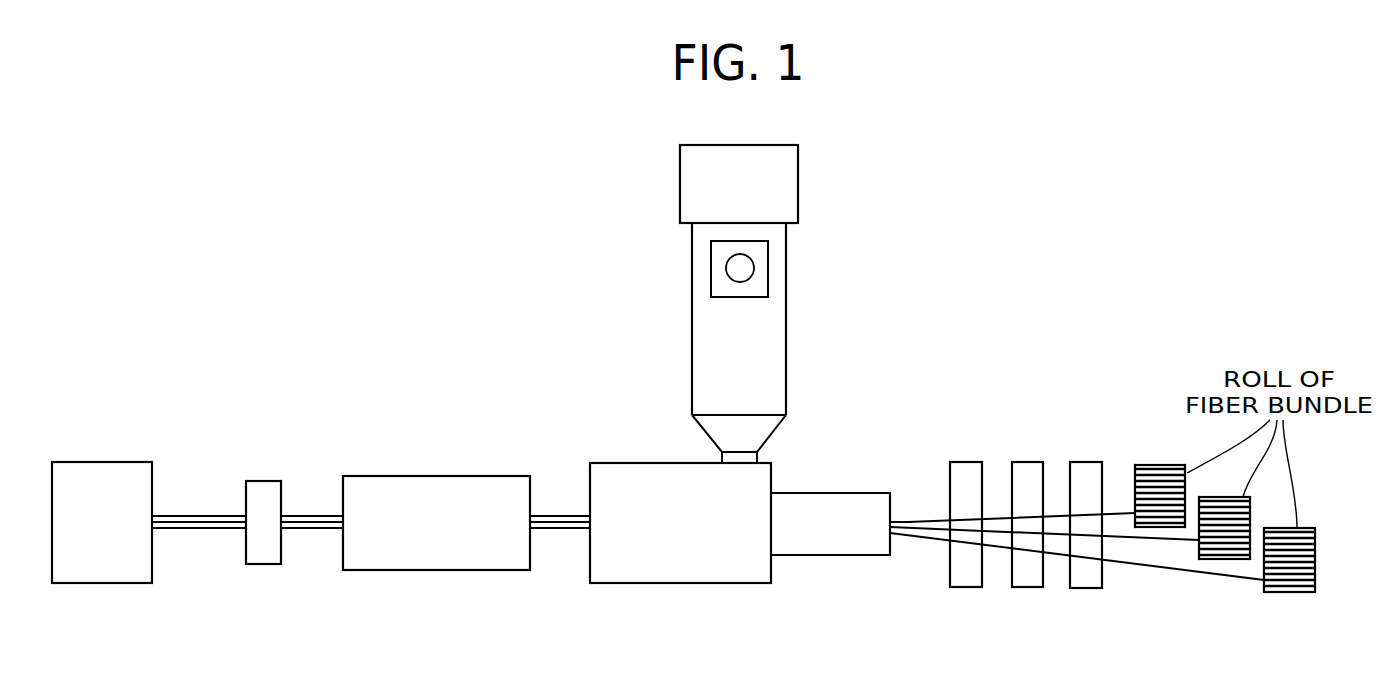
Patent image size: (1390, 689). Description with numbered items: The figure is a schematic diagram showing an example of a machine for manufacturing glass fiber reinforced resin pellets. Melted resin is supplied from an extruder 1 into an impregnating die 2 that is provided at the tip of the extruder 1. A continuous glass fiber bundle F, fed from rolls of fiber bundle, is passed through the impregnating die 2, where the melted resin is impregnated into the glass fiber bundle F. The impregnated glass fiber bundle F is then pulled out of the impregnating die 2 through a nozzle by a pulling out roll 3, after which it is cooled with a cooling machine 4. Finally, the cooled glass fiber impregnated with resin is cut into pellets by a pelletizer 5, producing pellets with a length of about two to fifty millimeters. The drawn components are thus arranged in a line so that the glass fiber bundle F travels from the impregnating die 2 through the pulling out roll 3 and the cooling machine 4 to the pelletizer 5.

The extruder 1 is at (793, 332).
The impregnating die 2 is at (737, 598).
The pulling out roll 3 is at (264, 558).
The cooling machine 4 is at (417, 563).
The pelletizer 5 is at (111, 578).
The glass fiber bundle F is at (908, 525).